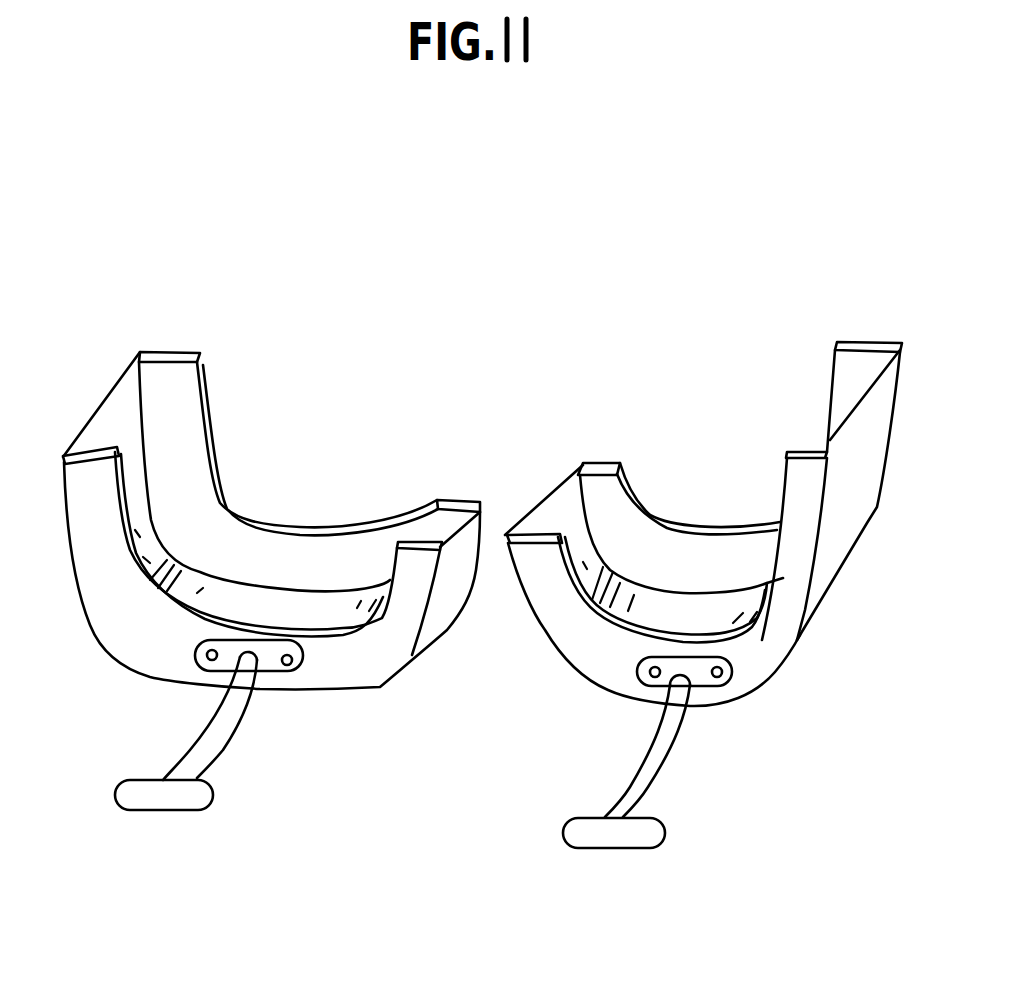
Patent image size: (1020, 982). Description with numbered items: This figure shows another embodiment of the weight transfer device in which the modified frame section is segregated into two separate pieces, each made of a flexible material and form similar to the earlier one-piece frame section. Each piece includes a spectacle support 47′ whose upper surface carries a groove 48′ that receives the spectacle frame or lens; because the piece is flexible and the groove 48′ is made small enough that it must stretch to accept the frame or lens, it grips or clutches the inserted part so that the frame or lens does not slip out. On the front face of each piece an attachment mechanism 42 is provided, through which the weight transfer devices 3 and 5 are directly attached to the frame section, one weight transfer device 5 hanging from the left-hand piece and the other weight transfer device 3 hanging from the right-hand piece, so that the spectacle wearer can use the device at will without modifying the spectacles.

The spectacle support 47′ is at (93, 621).
The groove 48′ is at (197, 567).
The attachment mechanism 42 is at (288, 665).
The weight transfer device 5 is at (238, 734).
The weight transfer device 3 is at (676, 764).